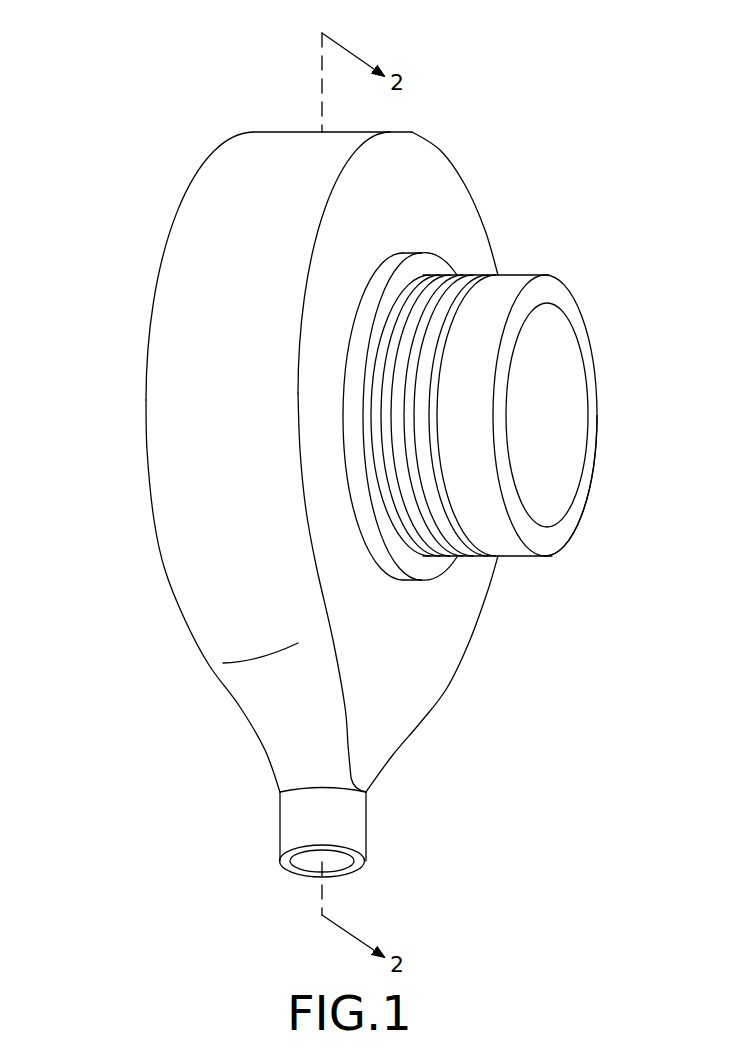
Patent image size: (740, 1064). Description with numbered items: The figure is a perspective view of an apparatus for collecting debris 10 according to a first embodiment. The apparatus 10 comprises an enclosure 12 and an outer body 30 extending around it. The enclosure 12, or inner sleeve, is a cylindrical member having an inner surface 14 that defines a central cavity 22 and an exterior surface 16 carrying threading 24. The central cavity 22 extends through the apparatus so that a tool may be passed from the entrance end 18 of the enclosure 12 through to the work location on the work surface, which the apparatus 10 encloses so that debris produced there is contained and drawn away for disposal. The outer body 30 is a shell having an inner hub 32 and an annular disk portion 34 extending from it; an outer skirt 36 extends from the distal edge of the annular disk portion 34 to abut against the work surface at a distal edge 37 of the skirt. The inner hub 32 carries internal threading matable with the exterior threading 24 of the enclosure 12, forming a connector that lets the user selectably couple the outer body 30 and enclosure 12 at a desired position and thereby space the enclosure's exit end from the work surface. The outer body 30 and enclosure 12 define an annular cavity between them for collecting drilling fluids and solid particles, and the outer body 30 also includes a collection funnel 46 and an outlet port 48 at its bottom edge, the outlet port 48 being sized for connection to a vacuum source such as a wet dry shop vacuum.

The apparatus for collecting debris 10 is at (449, 139).
The enclosure 12 is at (545, 303).
The inner surface 14 is at (563, 390).
The exterior surface 16 is at (505, 283).
The entrance end 18 is at (556, 556).
The central cavity 22 is at (558, 471).
The threading 24 is at (458, 557).
The outer body 30 is at (196, 480).
The inner hub 32 is at (415, 580).
The annular disk portion 34 is at (418, 197).
The outer skirt 36 is at (252, 173).
The distal edge 37 is at (146, 382).
The collection funnel 46 is at (398, 717).
The outlet port 48 is at (357, 864).